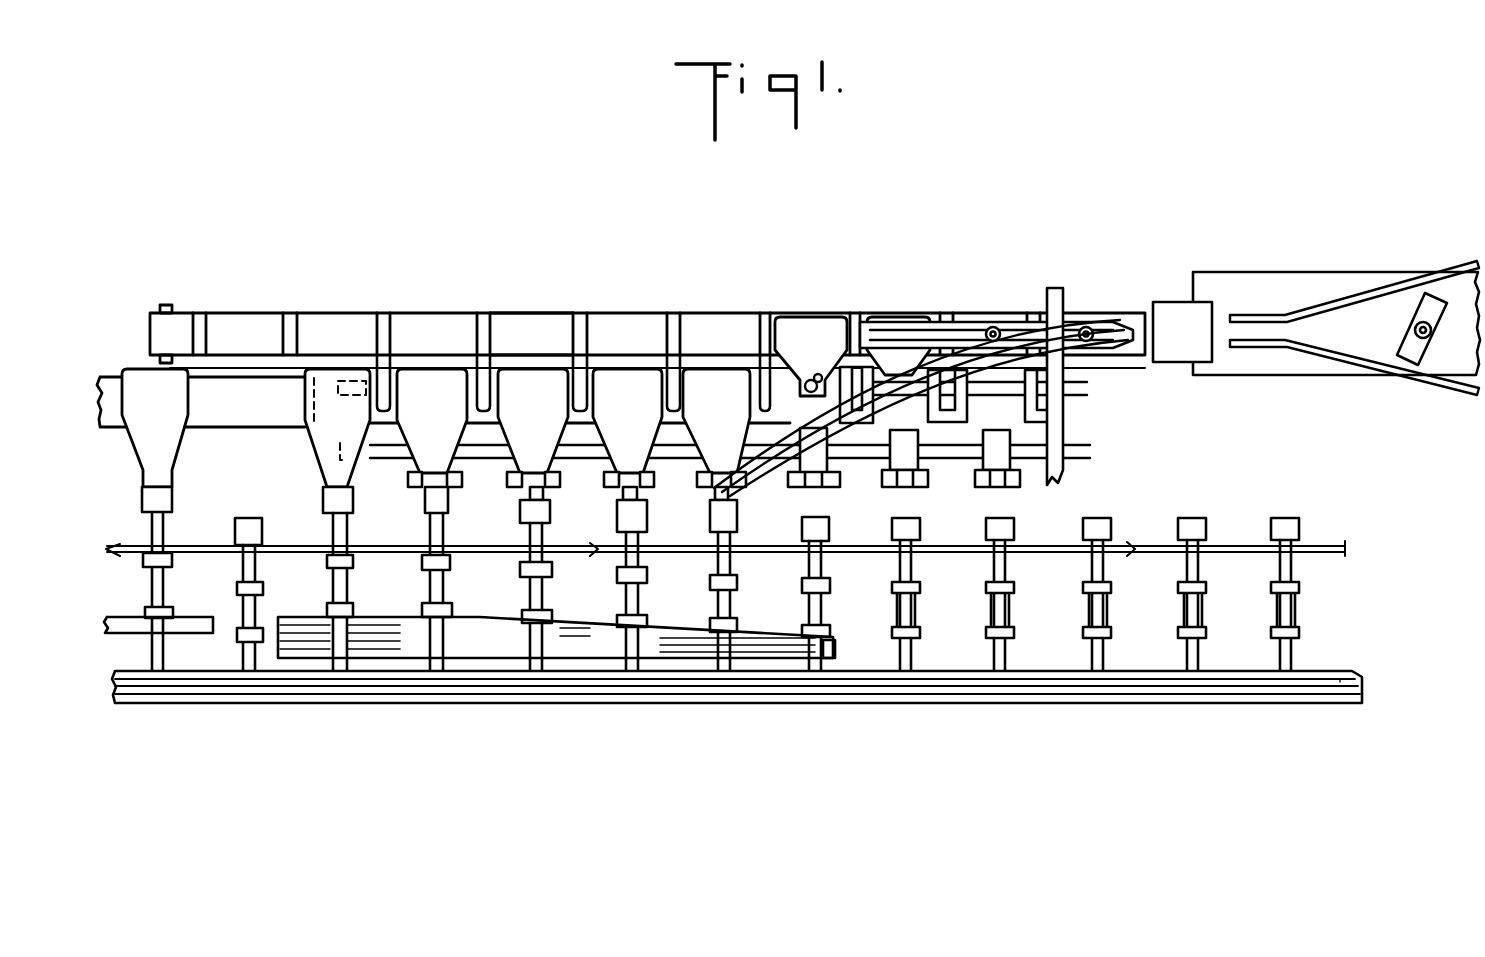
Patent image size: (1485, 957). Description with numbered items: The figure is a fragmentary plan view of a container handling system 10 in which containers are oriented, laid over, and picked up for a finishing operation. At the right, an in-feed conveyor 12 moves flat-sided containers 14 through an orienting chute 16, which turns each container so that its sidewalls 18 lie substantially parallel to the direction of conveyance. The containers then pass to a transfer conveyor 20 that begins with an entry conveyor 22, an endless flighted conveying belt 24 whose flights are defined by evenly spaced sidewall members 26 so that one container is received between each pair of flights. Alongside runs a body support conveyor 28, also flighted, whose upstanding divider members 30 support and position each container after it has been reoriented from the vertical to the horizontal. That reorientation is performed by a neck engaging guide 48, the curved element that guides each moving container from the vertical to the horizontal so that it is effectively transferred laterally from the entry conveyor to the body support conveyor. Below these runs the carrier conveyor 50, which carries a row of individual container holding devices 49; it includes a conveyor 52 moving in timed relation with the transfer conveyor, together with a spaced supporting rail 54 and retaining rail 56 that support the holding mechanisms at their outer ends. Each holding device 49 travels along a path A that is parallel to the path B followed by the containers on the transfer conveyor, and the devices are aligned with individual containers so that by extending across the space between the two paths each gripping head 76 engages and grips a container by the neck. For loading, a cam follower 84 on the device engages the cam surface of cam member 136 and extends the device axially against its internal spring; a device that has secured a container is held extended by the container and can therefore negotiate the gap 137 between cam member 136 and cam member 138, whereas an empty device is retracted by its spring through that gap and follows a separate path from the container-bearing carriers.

The container handling system 10 is at (674, 300).
The in-feed conveyor 12 is at (1306, 272).
The container 14 is at (1438, 306).
The orienting chute 16 is at (1404, 290).
The sidewalls 18 is at (795, 330).
The transfer conveyor 20 is at (487, 283).
The entry conveyor 22 is at (553, 318).
The endless flighted conveying belt 24 is at (342, 318).
The sidewall members 26 is at (290, 320).
The body support conveyor 28 is at (298, 438).
The divider members 30 is at (383, 413).
The neck engaging guide 48 is at (938, 330).
The container holding device 49 is at (986, 622).
The carrier conveyor 50 is at (1386, 673).
The conveyor 52 is at (720, 708).
The supporting rail 54 is at (872, 554).
The retaining rail 56 is at (1158, 553).
The gripping head 76 is at (246, 518).
The cam follower 84 is at (243, 643).
The cam member 136 is at (297, 617).
The gap 137 is at (232, 640).
The cam member 138 is at (210, 617).
The path A is at (1204, 503).
The path B is at (1204, 474).